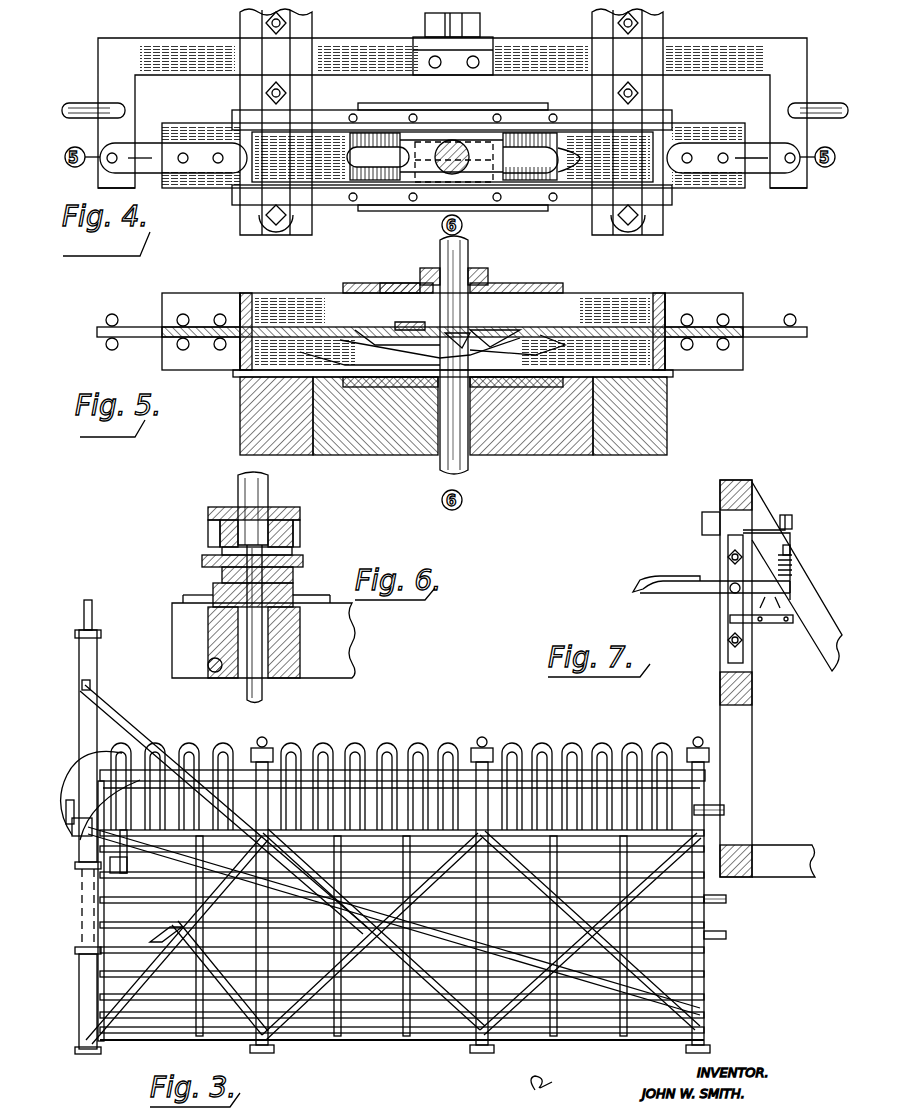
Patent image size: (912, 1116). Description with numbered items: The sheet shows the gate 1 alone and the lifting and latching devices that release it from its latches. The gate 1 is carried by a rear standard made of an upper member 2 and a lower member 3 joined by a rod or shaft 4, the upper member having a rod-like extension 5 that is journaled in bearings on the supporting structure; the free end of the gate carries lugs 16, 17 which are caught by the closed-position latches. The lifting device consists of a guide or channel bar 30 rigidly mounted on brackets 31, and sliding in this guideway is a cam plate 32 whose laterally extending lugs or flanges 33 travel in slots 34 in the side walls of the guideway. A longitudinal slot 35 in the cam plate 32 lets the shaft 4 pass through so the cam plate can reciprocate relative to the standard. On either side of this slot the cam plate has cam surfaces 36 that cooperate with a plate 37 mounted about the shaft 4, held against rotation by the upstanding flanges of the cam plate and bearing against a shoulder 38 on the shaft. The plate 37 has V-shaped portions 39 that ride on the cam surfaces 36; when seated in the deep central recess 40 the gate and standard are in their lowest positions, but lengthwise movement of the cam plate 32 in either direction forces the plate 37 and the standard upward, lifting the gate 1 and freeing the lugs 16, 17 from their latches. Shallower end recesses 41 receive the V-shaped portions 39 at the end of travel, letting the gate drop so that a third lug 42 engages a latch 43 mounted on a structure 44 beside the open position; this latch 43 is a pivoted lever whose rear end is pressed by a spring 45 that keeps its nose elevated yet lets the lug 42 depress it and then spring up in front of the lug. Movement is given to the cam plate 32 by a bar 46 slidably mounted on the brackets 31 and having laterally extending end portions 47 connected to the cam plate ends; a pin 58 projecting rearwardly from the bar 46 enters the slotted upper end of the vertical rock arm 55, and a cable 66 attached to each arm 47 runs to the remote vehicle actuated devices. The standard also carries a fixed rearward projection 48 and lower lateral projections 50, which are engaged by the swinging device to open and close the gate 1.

In FIG. 3, the gate 1 is at (423, 1040).
In FIG. 3, the upper member of the standard 2 is at (97, 683).
In FIG. 3, the lower member of the standard 3 is at (86, 1056).
In FIG. 4, the rod or shaft 4 is at (437, 145).
In FIG. 5, the rod or shaft 4 is at (470, 250).
In FIG. 6, the rod or shaft 4 is at (245, 482).
In FIG. 3, the rod or shaft 4 is at (97, 898).
In FIG. 4, the extension 5 is at (450, 158).
In FIG. 3, the extension 5 is at (92, 612).
In FIG. 3, the lug 16 is at (686, 772).
In FIG. 3, the lug 17 is at (726, 935).
In FIG. 4, the guide or channel bar 30 is at (340, 198).
In FIG. 5, the guide or channel bar 30 is at (240, 355).
In FIG. 6, the guide or channel bar 30 is at (210, 515).
In FIG. 4, the brackets 31 is at (300, 222).
In FIG. 5, the brackets 31 is at (262, 425).
In FIG. 6, the brackets 31 is at (263, 640).
In FIG. 4, the cam plate 32 is at (452, 157).
In FIG. 5, the cam plate 32 is at (452, 319).
In FIG. 6, the cam plate 32 is at (293, 578).
In FIG. 4, the lugs or flanges 33 is at (541, 110).
In FIG. 6, the lugs or flanges 33 is at (205, 568).
In FIG. 6, the slots 34 is at (303, 548).
In FIG. 4, the longitudinal slot 35 is at (350, 162).
In FIG. 5, the longitudinal slot 35 is at (345, 348).
In FIG. 6, the longitudinal slot 35 is at (213, 588).
In FIG. 4, the cam surfaces 36 is at (554, 156).
In FIG. 5, the cam surfaces 36 is at (517, 327).
In FIG. 4, the plate 37 is at (480, 145).
In FIG. 5, the plate 37 is at (482, 310).
In FIG. 6, the plate 37 is at (303, 561).
In FIG. 5, the shoulder 38 is at (412, 320).
In FIG. 6, the shoulder 38 is at (220, 545).
In FIG. 5, the V-shaped portions 39 is at (470, 340).
In FIG. 4, the central recess 40 is at (432, 182).
In FIG. 5, the central recess 40 is at (430, 343).
In FIG. 5, the recesses 41 is at (570, 322).
In FIG. 3, the third lug 42 is at (726, 899).
In FIG. 7, the latch 43 is at (672, 594).
In FIG. 7, the structure 44 is at (752, 692).
In FIG. 7, the spring 45 is at (790, 576).
In FIG. 4, the bar 46 is at (738, 50).
In FIG. 4, the laterally extending end portions 47 is at (789, 190).
In FIG. 5, the laterally extending end portions 47 is at (118, 340).
In FIG. 3, the fixed projection 48 is at (95, 754).
In FIG. 3, the lateral projections 50 is at (140, 760).
In FIG. 4, the rock arm 55 is at (425, 23).
In FIG. 4, the pin 58 is at (480, 23).
In FIG. 4, the cable 66 is at (78, 103).